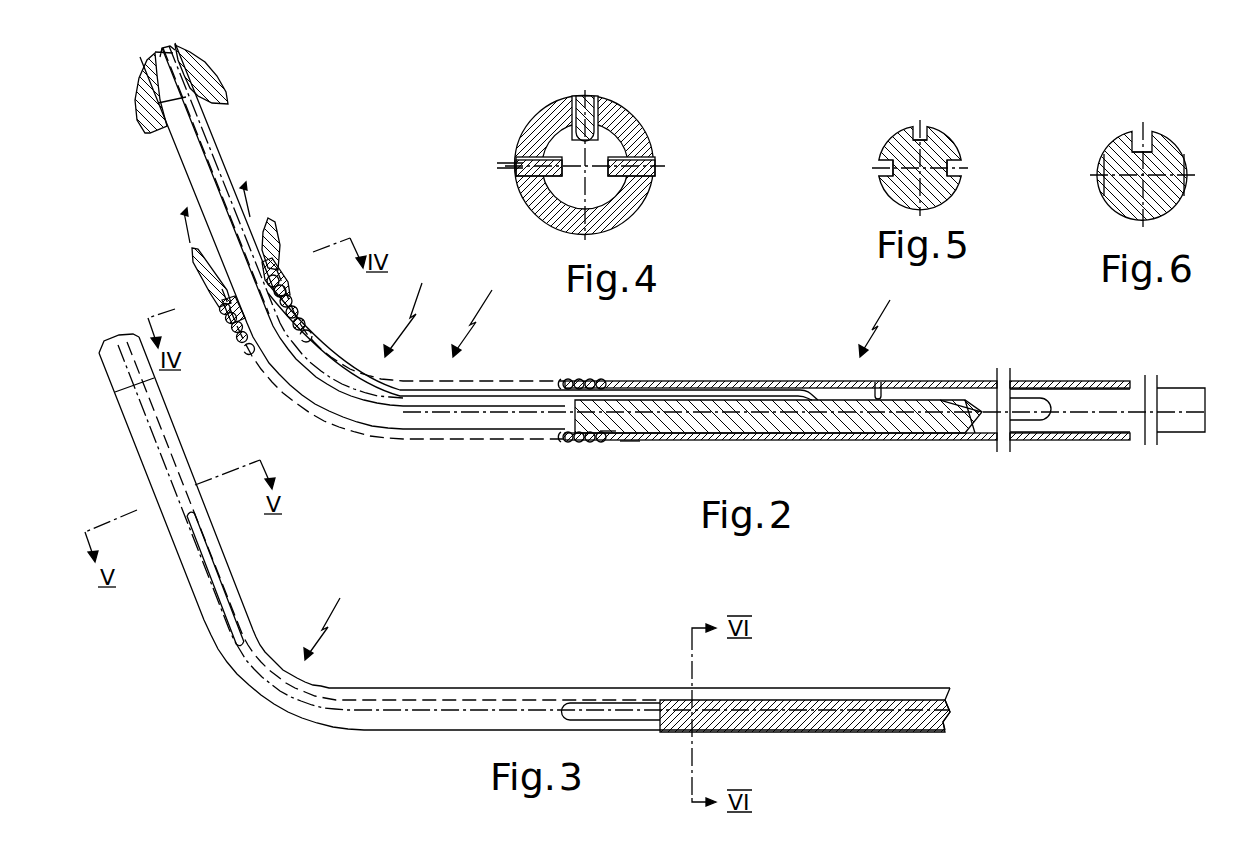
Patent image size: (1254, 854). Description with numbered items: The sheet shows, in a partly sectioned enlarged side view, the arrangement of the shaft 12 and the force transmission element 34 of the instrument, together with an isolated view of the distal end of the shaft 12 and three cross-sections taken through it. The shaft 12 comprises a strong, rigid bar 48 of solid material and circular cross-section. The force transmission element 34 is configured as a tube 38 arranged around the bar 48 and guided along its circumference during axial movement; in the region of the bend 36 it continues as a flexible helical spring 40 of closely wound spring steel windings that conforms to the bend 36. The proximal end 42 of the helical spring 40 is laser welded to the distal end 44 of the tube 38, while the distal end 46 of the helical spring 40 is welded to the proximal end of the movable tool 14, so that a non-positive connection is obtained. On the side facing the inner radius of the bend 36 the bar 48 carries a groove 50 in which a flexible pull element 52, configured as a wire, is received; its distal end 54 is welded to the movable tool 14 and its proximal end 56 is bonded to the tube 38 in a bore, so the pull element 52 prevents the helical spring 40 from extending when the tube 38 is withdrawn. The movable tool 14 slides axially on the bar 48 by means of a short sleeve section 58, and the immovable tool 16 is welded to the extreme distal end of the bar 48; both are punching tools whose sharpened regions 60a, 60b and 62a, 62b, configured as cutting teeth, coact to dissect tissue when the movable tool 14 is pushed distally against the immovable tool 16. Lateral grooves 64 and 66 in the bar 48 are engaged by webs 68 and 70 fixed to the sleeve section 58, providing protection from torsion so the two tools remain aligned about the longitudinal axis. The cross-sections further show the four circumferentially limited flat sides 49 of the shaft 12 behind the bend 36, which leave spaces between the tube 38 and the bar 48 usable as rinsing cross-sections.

In FIG. 2, the shaft 12 is at (479, 310).
In FIG. 2, the movable tool 14 is at (192, 268).
In FIG. 2, the immovable tool 16 is at (142, 87).
In FIG. 2, the force transmission element 34 is at (885, 316).
In FIG. 2, the bend 36 is at (411, 307).
In FIG. 3, the bend 36 is at (331, 616).
In FIG. 2, the tube 38 is at (884, 438).
In FIG. 2, the helical spring 40 is at (592, 442).
In FIG. 2, the proximal end of helical spring 42 is at (607, 445).
In FIG. 2, the distal end of tube 44 is at (628, 442).
In FIG. 2, the distal end of helical spring 46 is at (225, 318).
In FIG. 2, the bar 48 is at (485, 426).
In FIG. 3, the bar 48 is at (430, 732).
In FIG. 4, the bar 48 is at (533, 208).
In FIG. 5, the bar 48 is at (950, 192).
In FIG. 6, the bar 48 is at (1178, 208).
In FIG. 3, the flat sides 49 is at (628, 720).
In FIG. 6, the flat sides 49 is at (1186, 168).
In FIG. 3, the groove 50 is at (462, 688).
In FIG. 5, the groove 50 is at (918, 132).
In FIG. 6, the groove 50 is at (1137, 132).
In FIG. 2, the flexible pull element 52 is at (315, 355).
In FIG. 2, the distal end of pull element 54 is at (278, 263).
In FIG. 4, the distal end of pull element 54 is at (590, 96).
In FIG. 2, the proximal end of pull element 56 is at (842, 380).
In FIG. 2, the sleeve section 58 is at (218, 300).
In FIG. 4, the sleeve section 58 is at (545, 125).
In FIG. 2, the sharpened region 60a is at (272, 218).
In FIG. 2, the sharpened region 60b is at (194, 252).
In FIG. 2, the sharpened region 62a is at (228, 102).
In FIG. 2, the sharpened region 62b is at (145, 132).
In FIG. 2, the lateral groove 64 is at (210, 185).
In FIG. 3, the lateral groove 64 is at (143, 428).
In FIG. 4, the lateral groove 64 is at (638, 130).
In FIG. 5, the lateral groove 64 is at (958, 165).
In FIG. 4, the lateral groove 66 is at (517, 157).
In FIG. 5, the lateral groove 66 is at (880, 166).
In FIG. 4, the web 68 is at (657, 160).
In FIG. 4, the web 70 is at (497, 166).